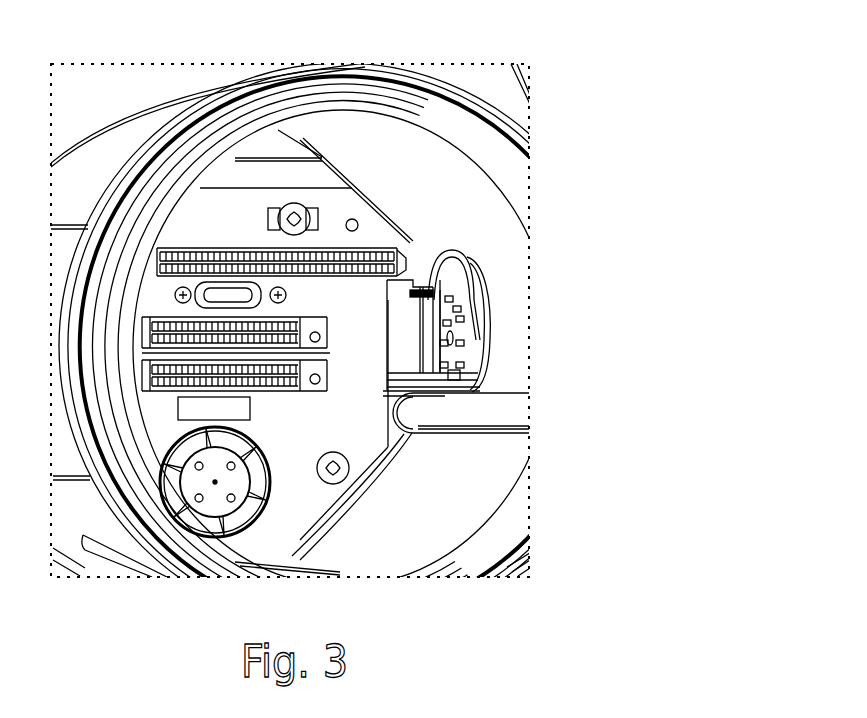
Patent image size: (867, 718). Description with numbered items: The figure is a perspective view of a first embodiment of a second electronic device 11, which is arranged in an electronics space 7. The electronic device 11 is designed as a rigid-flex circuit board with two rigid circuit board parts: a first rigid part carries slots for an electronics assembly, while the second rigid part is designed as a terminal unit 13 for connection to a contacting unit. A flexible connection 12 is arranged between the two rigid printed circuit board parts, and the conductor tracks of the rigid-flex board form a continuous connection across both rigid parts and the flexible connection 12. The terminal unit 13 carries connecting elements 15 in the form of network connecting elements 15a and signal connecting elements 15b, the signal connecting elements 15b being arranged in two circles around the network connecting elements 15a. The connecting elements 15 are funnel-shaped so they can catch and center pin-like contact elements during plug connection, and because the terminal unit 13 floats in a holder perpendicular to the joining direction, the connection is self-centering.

The electronics space 7 is at (497, 204).
The second electronic device 11 is at (338, 425).
The flexible connection 12 is at (405, 315).
The terminal unit 13 is at (500, 372).
The connecting elements 15 is at (468, 366).
The network connecting elements 15a is at (462, 325).
The signal connecting elements 15b is at (463, 263).